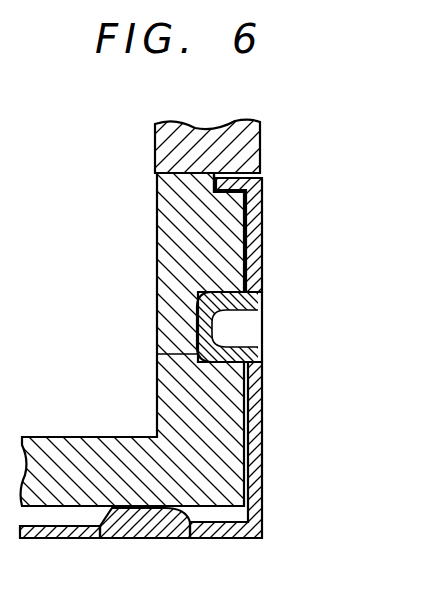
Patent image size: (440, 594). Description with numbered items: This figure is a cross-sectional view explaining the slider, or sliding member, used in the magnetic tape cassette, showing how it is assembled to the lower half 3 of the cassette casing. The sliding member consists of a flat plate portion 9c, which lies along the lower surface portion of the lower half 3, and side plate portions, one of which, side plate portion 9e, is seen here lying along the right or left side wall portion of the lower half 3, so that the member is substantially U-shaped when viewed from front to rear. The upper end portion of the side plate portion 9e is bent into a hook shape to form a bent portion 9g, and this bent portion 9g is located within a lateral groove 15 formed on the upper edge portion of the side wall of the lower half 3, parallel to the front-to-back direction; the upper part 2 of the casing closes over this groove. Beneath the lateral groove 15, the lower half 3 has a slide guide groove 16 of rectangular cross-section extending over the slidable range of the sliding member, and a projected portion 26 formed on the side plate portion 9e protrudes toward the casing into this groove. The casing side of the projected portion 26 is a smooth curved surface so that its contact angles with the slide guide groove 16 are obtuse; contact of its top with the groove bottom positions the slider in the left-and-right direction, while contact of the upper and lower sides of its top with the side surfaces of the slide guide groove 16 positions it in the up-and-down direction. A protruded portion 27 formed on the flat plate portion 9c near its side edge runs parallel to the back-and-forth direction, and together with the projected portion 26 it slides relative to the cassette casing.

The housing member 2 is at (162, 151).
The lower half 3 is at (160, 247).
The lateral groove 15 is at (226, 165).
The bent portion 9g is at (263, 212).
The projected portion 26 is at (222, 330).
The slide guide groove 16 is at (158, 354).
The side plate portion 9e is at (265, 408).
The flat plate portion 9c is at (82, 538).
The protruded portion 27 is at (188, 535).